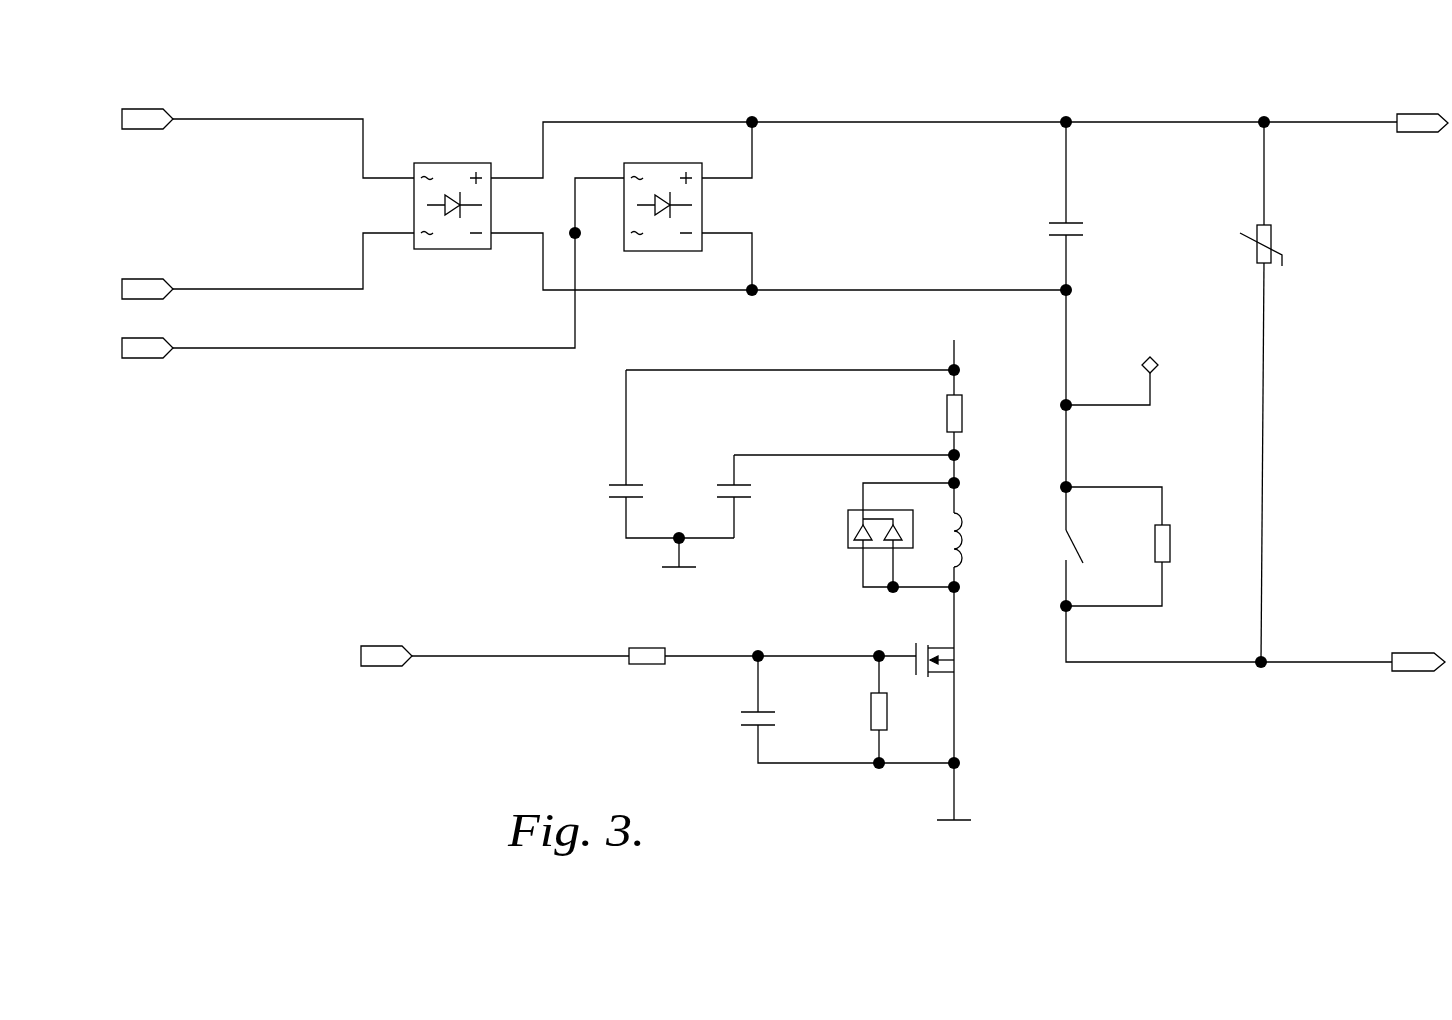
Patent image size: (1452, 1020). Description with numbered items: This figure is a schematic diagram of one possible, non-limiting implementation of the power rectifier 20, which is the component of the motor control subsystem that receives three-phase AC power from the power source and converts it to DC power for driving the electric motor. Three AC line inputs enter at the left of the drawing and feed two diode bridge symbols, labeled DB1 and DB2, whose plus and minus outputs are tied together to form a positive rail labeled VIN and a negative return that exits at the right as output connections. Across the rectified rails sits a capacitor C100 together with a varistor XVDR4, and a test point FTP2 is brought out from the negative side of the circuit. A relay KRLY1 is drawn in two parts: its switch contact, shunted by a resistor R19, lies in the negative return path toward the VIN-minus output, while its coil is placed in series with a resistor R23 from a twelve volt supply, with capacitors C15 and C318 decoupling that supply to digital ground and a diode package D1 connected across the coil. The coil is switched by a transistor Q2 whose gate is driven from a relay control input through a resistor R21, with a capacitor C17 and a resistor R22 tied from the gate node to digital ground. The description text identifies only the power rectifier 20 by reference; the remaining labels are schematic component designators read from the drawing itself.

The power rectifier 20 is at (785, 426).
The diode bridge DB1 is at (452, 190).
The diode bridge DB2 is at (663, 192).
The capacitor C100 is at (1100, 304).
The varistor XVDR4 is at (1294, 392).
The test point FTP2 is at (1140, 379).
The relay KRLY1 is at (1048, 546).
The resistor R19 is at (1143, 546).
The resistor R23 is at (978, 413).
The capacitor C15 is at (646, 454).
The capacitor C318 is at (766, 496).
The diode D1 is at (885, 535).
The transistor Q2 is at (951, 660).
The resistor R21 is at (646, 673).
The capacitor C17 is at (782, 695).
The resistor R22 is at (904, 709).